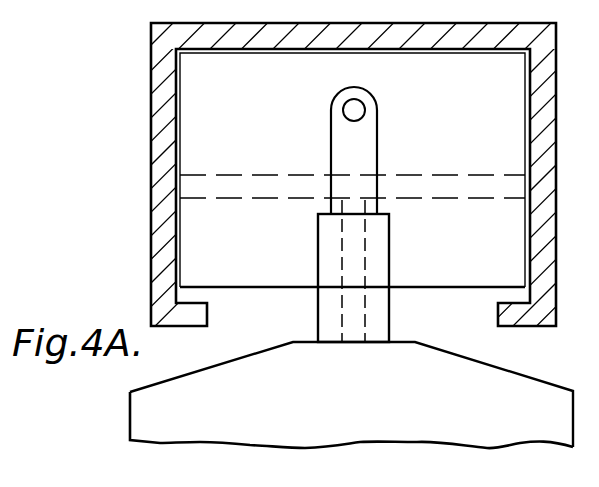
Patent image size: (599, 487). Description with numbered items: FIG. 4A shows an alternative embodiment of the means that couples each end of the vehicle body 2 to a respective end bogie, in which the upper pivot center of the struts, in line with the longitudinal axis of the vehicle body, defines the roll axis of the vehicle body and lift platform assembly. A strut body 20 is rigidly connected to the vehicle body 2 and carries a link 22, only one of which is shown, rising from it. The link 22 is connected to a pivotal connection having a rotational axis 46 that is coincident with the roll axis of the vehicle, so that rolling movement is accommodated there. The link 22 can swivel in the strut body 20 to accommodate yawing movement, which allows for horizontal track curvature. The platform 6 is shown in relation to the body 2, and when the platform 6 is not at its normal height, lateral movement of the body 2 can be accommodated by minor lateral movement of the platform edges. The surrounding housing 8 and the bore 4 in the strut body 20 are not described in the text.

The vehicle body 2 is at (276, 400).
The bore 4 is at (366, 315).
The platform 6 is at (443, 180).
The housing 8 is at (165, 130).
The strut body 20 is at (318, 263).
The link 22 is at (350, 148).
The rotational axis 46 is at (344, 111).